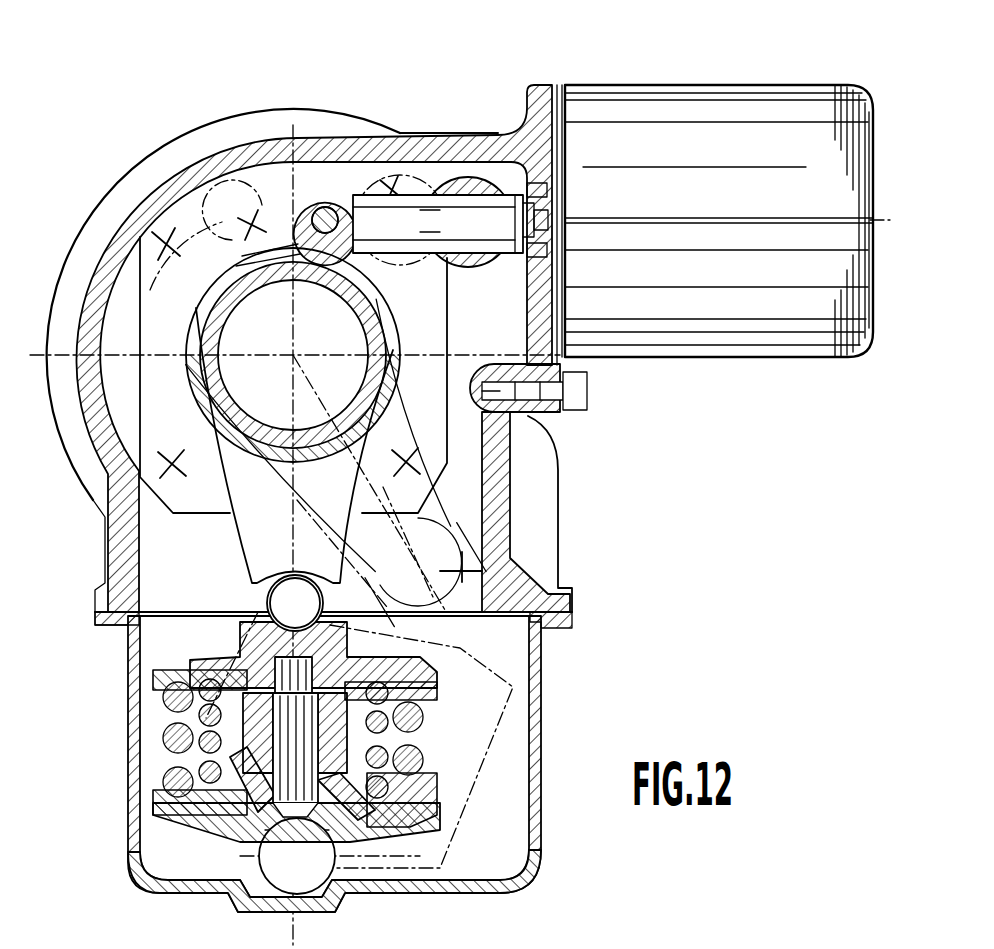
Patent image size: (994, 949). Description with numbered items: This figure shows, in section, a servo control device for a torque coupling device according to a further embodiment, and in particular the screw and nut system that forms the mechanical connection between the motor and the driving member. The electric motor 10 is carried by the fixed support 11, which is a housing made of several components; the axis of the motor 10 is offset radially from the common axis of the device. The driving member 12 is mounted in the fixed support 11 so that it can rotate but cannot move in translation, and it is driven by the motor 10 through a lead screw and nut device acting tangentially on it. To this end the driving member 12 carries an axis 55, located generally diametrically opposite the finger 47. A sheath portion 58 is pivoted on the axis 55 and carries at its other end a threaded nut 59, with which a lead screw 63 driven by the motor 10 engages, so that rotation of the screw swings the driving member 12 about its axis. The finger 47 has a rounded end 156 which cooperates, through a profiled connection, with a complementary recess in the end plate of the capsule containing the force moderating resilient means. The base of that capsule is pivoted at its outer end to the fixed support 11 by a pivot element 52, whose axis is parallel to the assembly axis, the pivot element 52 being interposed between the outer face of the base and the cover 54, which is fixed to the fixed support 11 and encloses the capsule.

The electric motor 10 is at (692, 103).
The fixed support 11 is at (418, 133).
The driving member 12 is at (178, 327).
The finger 47 is at (250, 545).
The pivot element 52 is at (290, 900).
The cover 54 is at (167, 890).
The axis 55 is at (332, 198).
The sheath portion 58 is at (352, 205).
The threaded nut 59 is at (492, 262).
The lead screw 63 is at (413, 222).
The rounded end 156 is at (322, 596).